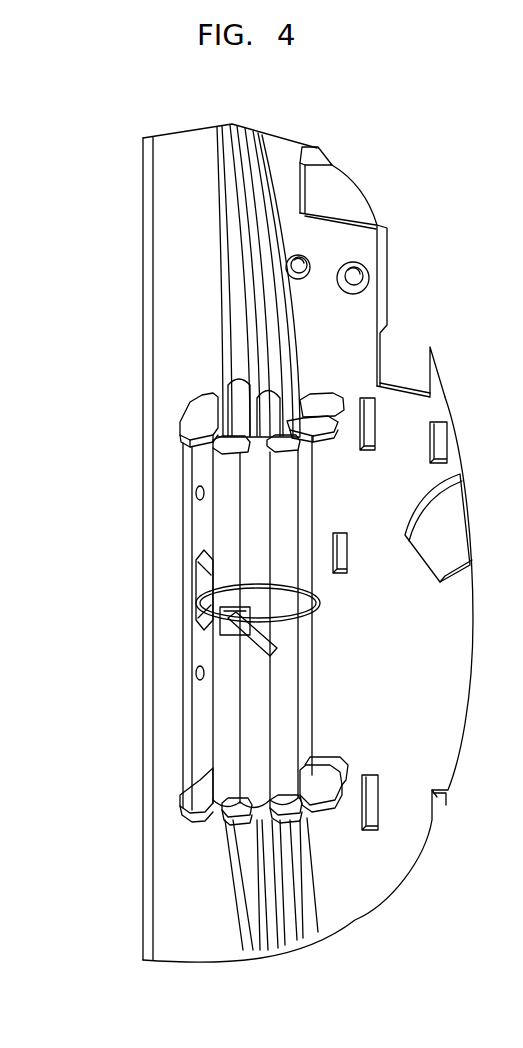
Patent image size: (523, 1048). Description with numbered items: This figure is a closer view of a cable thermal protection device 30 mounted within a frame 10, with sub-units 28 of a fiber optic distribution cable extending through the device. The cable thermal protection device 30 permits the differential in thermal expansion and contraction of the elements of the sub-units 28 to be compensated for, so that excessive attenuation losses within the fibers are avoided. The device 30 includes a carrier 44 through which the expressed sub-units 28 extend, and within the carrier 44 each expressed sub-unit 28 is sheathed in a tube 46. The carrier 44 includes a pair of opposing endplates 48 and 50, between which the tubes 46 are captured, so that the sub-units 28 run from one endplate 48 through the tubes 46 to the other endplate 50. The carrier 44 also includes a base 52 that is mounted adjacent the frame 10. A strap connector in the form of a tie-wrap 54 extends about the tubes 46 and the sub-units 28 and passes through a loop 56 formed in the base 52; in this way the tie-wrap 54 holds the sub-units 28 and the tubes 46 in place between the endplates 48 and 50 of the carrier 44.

The frame 10 is at (167, 907).
The sub-units 28 is at (245, 256).
The cable thermal protection device 30 is at (168, 628).
The carrier 44 is at (192, 463).
The tube 46 is at (228, 525).
The endplate 48 is at (318, 432).
The endplate 50 is at (320, 803).
The base 52 is at (200, 757).
The tie-wrap 54 is at (307, 618).
The loop 56 is at (202, 572).